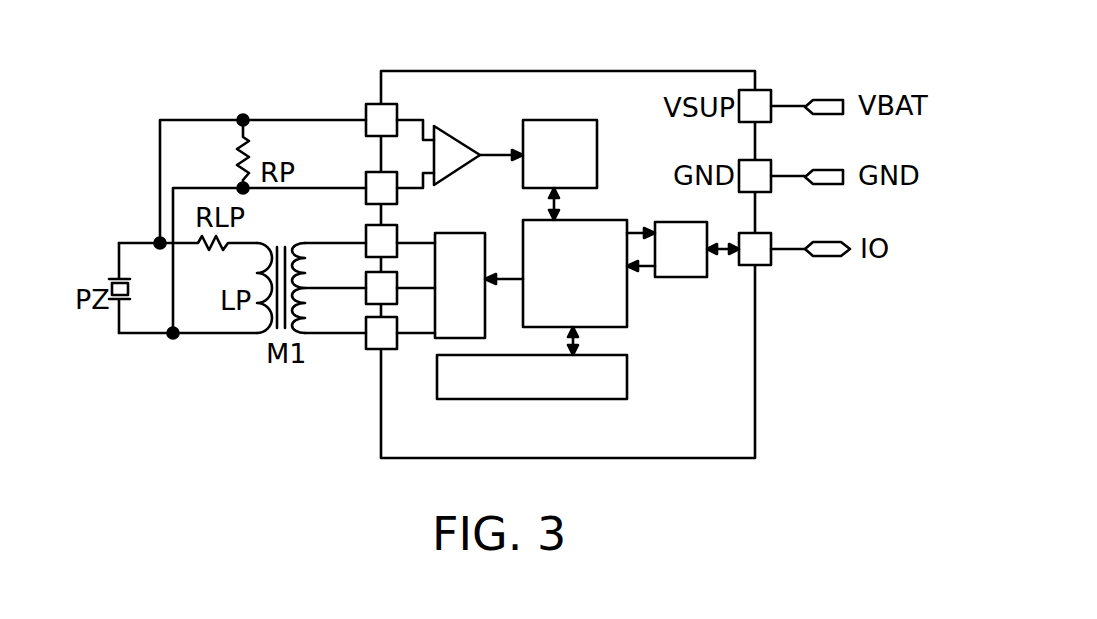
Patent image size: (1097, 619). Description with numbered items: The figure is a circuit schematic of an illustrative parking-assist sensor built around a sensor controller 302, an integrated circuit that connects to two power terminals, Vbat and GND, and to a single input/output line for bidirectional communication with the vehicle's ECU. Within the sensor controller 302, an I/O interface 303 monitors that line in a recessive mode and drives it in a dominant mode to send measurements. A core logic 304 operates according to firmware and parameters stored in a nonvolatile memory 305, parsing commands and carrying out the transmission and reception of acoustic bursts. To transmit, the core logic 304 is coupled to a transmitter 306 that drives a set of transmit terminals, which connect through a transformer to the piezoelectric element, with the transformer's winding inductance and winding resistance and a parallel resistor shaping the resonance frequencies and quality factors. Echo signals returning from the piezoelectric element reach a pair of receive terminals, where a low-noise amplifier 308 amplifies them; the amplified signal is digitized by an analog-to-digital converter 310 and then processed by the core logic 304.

The sensor controller 302 is at (702, 70).
The I/O interface 303 is at (690, 278).
The core logic 304 is at (628, 288).
The nonvolatile memory 305 is at (575, 400).
The transmitter 306 is at (453, 232).
The low-noise amplifier 308 is at (457, 134).
The analog-to-digital converter 310 is at (600, 134).